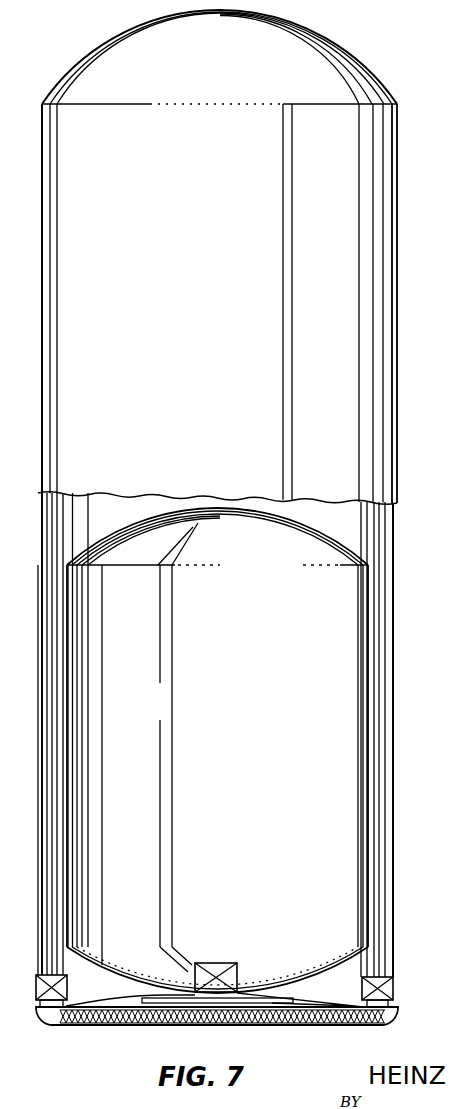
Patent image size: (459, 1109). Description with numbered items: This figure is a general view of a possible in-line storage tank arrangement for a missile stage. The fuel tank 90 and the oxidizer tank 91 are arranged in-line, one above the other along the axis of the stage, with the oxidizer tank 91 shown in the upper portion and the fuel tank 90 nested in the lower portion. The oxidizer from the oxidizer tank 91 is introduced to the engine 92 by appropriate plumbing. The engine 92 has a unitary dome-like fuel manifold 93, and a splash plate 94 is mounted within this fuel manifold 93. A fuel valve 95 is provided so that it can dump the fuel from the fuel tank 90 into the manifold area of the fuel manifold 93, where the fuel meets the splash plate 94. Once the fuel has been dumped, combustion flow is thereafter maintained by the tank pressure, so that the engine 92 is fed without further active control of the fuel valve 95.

The fuel tank 90 is at (217, 743).
The oxidizer tank 91 is at (217, 257).
The engine 92 is at (289, 1024).
The fuel manifold 93 is at (320, 998).
The splash plate 94 is at (152, 1026).
The fuel valve 95 is at (237, 970).